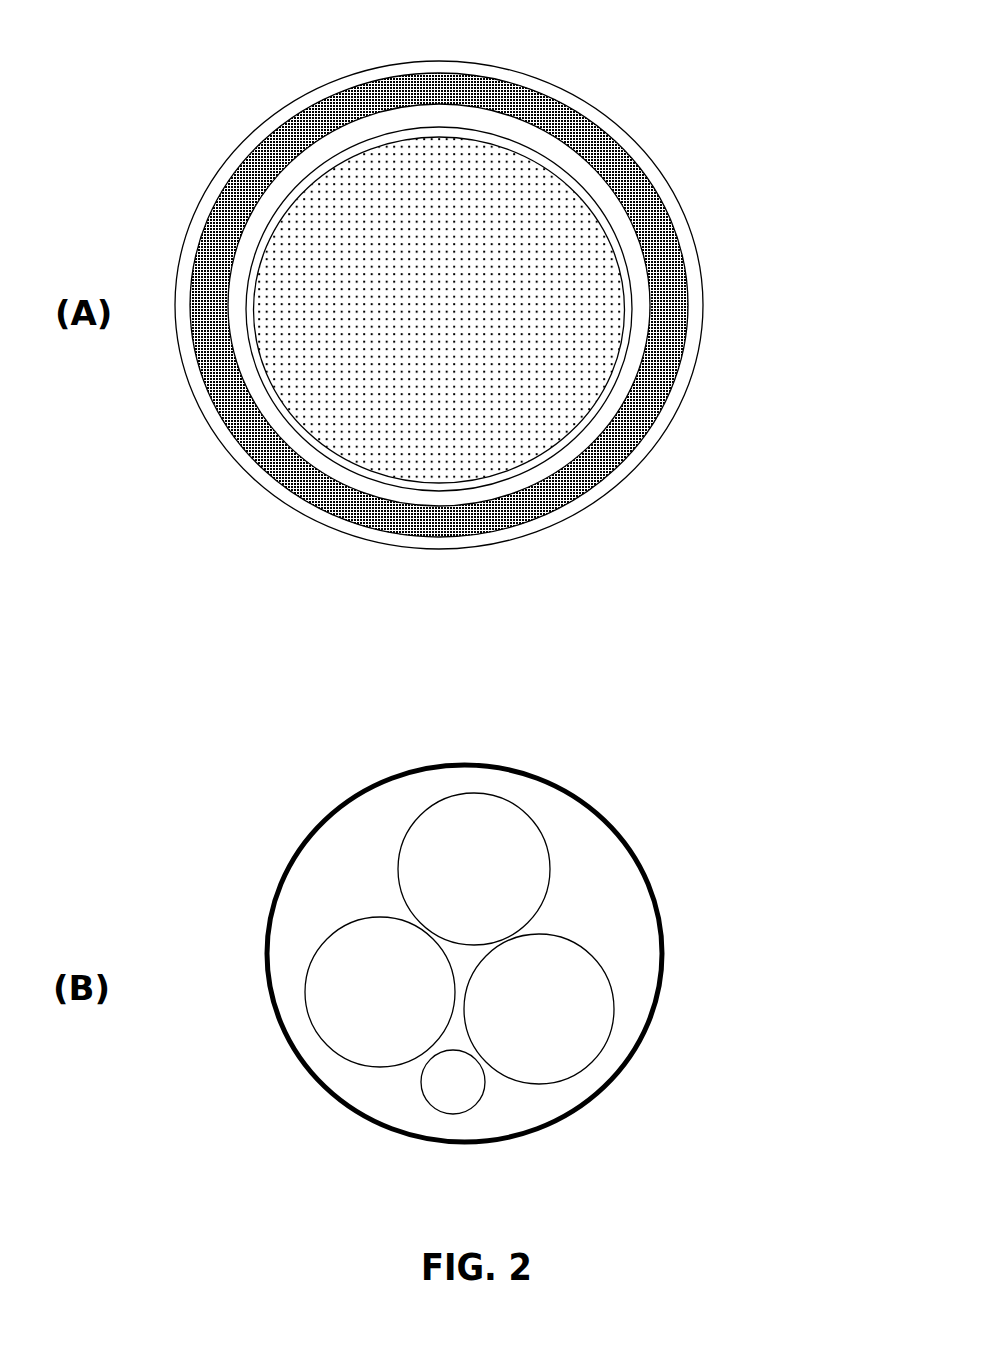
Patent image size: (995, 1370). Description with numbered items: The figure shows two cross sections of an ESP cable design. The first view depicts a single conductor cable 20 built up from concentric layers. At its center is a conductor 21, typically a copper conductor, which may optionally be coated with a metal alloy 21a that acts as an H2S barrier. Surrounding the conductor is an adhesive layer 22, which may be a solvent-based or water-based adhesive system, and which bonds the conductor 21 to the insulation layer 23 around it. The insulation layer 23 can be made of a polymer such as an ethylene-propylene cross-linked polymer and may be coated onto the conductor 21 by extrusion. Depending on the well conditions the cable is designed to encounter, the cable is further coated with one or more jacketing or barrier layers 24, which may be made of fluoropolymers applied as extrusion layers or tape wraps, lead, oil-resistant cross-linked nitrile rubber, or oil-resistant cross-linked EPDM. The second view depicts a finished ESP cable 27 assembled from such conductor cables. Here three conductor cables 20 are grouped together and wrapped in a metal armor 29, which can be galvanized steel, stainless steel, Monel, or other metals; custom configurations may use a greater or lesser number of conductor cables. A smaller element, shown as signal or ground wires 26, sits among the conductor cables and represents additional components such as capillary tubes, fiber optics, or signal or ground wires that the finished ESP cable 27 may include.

In FIG. 2A, the conductor cable 20 is at (215, 90).
In FIG. 2B, the conductor cable 20 is at (490, 887).
In FIG. 2A, the conductor 21 is at (461, 325).
In FIG. 2A, the metal alloy 21a is at (573, 183).
In FIG. 2A, the adhesive layer 22 is at (623, 230).
In FIG. 2A, the insulation layer 23 is at (675, 303).
In FIG. 2A, the barrier layers 24 is at (658, 430).
In FIG. 2B, the signal or ground wires 26 is at (469, 1094).
In FIG. 2B, the finished ESP cable 27 is at (297, 812).
In FIG. 2B, the metal armor 29 is at (653, 900).